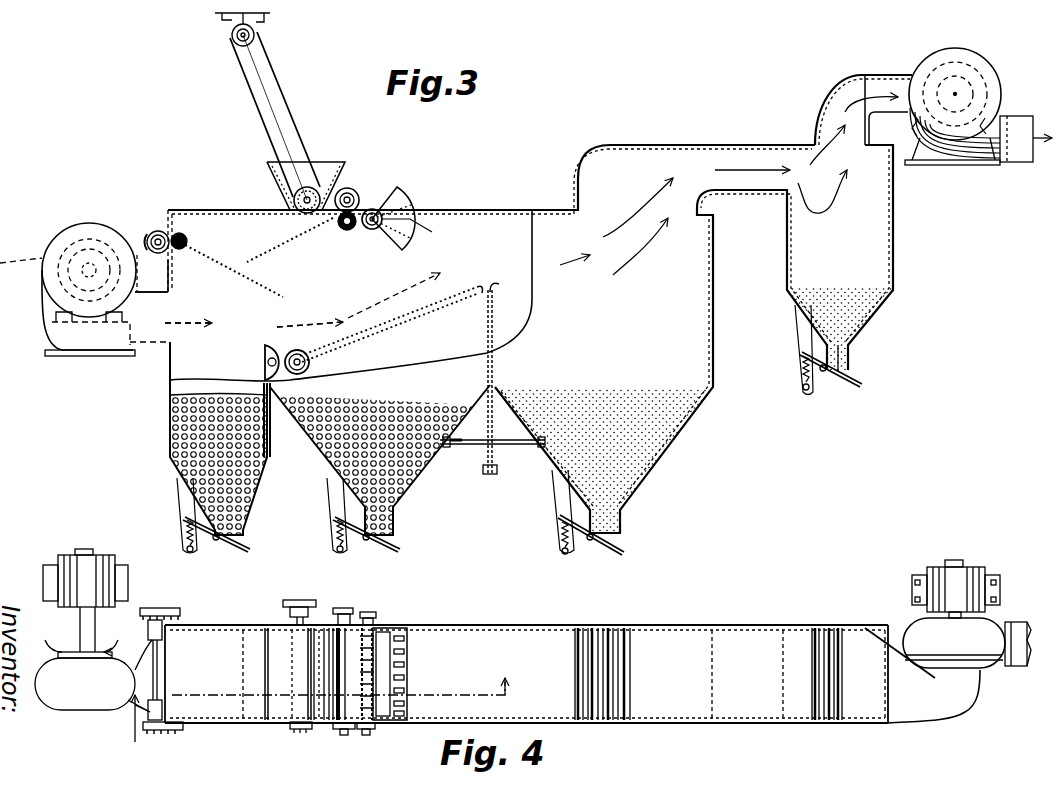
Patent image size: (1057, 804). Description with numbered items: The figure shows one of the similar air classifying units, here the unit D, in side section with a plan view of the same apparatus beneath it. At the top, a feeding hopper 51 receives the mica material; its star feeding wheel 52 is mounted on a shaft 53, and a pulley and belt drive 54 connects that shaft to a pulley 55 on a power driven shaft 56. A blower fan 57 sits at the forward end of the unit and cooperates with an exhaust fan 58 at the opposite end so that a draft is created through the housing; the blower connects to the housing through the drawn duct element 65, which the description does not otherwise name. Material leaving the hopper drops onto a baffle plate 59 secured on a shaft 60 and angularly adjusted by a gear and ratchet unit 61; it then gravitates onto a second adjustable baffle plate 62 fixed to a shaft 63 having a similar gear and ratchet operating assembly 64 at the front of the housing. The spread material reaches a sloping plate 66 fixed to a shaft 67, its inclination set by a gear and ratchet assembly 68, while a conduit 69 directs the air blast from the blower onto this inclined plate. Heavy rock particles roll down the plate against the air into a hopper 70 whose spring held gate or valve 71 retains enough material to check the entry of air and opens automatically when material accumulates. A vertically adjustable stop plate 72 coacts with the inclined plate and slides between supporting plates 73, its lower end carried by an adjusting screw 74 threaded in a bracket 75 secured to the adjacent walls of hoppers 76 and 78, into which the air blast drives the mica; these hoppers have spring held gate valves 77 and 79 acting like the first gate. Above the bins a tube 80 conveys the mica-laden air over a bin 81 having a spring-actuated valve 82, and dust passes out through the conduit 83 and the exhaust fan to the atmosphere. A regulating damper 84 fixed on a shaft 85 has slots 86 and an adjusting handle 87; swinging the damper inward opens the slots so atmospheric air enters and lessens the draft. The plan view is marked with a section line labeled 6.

In FIG. 3, the feeding hopper 51 is at (333, 163).
In FIG. 4, the star feeding wheel 52 is at (290, 640).
In FIG. 3, the shaft 53 is at (300, 212).
In FIG. 4, the shaft 53 is at (300, 731).
In FIG. 3, the pulley and belt drive 54 is at (291, 124).
In FIG. 4, the pulley and belt drive 54 is at (301, 600).
In FIG. 3, the pulley 55 is at (256, 40).
In FIG. 3, the power driven shaft 56 is at (231, 36).
In FIG. 3, the blower fan 57 is at (94, 233).
In FIG. 4, the blower fan 57 is at (88, 705).
In FIG. 3, the exhaust fan 58 is at (960, 56).
In FIG. 4, the exhaust fan 58 is at (967, 614).
In FIG. 3, the baffle plate 59 is at (287, 247).
In FIG. 3, the shaft 60 is at (346, 232).
In FIG. 3, the gear and ratchet unit 61 is at (350, 192).
In FIG. 4, the gear and ratchet unit 61 is at (346, 608).
In FIG. 3, the second adjustable baffle plate 62 is at (286, 300).
In FIG. 3, the shaft 63 is at (181, 250).
In FIG. 4, the shaft 63 is at (170, 732).
In FIG. 3, the gear and ratchet operating assembly 64 is at (155, 231).
In FIG. 4, the gear and ratchet operating assembly 64 is at (160, 609).
In FIG. 3, the blower duct 65 is at (167, 270).
In FIG. 4, the blower duct 65 is at (135, 675).
In FIG. 3, the sloping plate 66 is at (370, 322).
In FIG. 3, the shaft 67 is at (262, 362).
In FIG. 3, the gear and ratchet assembly 68 is at (310, 362).
In FIG. 3, the conduit 69 is at (285, 307).
In FIG. 4, the conduit 69 is at (126, 721).
In FIG. 3, the hopper 70 is at (172, 388).
In FIG. 3, the spring held gate or valve 71 is at (226, 545).
In FIG. 3, the vertically adjustable stop plate 72 is at (487, 310).
In FIG. 3, the supporting plate 73 is at (494, 372).
In FIG. 3, the adjusting screw 74 is at (498, 470).
In FIG. 3, the bracket 75 is at (470, 448).
In FIG. 3, the hopper 76 is at (380, 460).
In FIG. 3, the spring held gate valve 77 is at (380, 545).
In FIG. 3, the hopper 78 is at (604, 447).
In FIG. 3, the spring held gate valve 79 is at (594, 545).
In FIG. 3, the tube 80 is at (703, 200).
In FIG. 4, the tube 80 is at (708, 674).
In FIG. 3, the bin 81 is at (840, 302).
In FIG. 3, the spring-actuated valve 82 is at (836, 378).
In FIG. 3, the conduit 83 is at (828, 105).
In FIG. 4, the conduit 83 is at (367, 730).
In FIG. 3, the regulating damper 84 is at (405, 198).
In FIG. 4, the regulating damper 84 is at (400, 632).
In FIG. 3, the shaft 85 is at (372, 231).
In FIG. 4, the slots 86 is at (408, 664).
In FIG. 3, the adjusting handle 87 is at (414, 231).
In FIG. 4, the adjusting handle 87 is at (372, 616).
In FIG. 3, the unit D is at (497, 208).
In FIG. 4, the unit D is at (545, 636).
In FIG. 4, the section line 6 is at (326, 699).